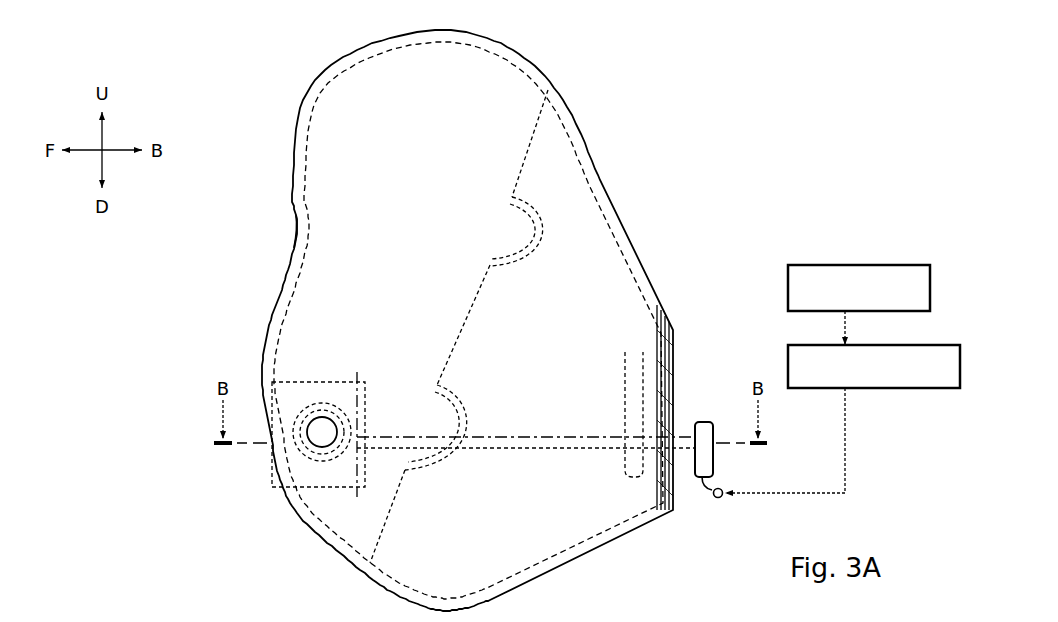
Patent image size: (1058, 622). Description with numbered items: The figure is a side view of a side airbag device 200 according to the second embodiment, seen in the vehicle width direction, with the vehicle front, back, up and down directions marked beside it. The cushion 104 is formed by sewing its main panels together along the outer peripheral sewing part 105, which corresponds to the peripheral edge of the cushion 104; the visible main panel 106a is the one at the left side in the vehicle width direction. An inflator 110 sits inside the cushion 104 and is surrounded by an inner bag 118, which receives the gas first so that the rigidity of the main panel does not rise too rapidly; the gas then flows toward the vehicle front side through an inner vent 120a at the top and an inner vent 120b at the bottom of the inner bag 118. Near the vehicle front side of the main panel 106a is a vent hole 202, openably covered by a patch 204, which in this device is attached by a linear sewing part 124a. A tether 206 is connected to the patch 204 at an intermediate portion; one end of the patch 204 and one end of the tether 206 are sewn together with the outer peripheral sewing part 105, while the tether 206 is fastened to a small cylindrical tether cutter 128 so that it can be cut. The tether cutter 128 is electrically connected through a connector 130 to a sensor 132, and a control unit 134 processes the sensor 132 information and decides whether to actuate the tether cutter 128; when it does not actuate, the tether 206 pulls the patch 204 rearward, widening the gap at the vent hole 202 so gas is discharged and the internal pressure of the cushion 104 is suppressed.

The side airbag device 200 is at (268, 54).
The cushion 104 is at (350, 57).
The main panel 106a is at (338, 122).
The outer peripheral sewing part 105 is at (297, 192).
The inner bag 118 is at (530, 143).
The inner vent 120a is at (510, 223).
The inner vent 120b is at (425, 382).
The sewing part 124a is at (358, 372).
The patch 204 is at (272, 380).
The vent hole 202 is at (318, 446).
The tether 206 is at (510, 433).
The inflator 110 is at (630, 350).
The tether cutter 128 is at (706, 420).
The connector 130 is at (718, 499).
The sensor 132 is at (860, 265).
The control unit 134 is at (866, 390).